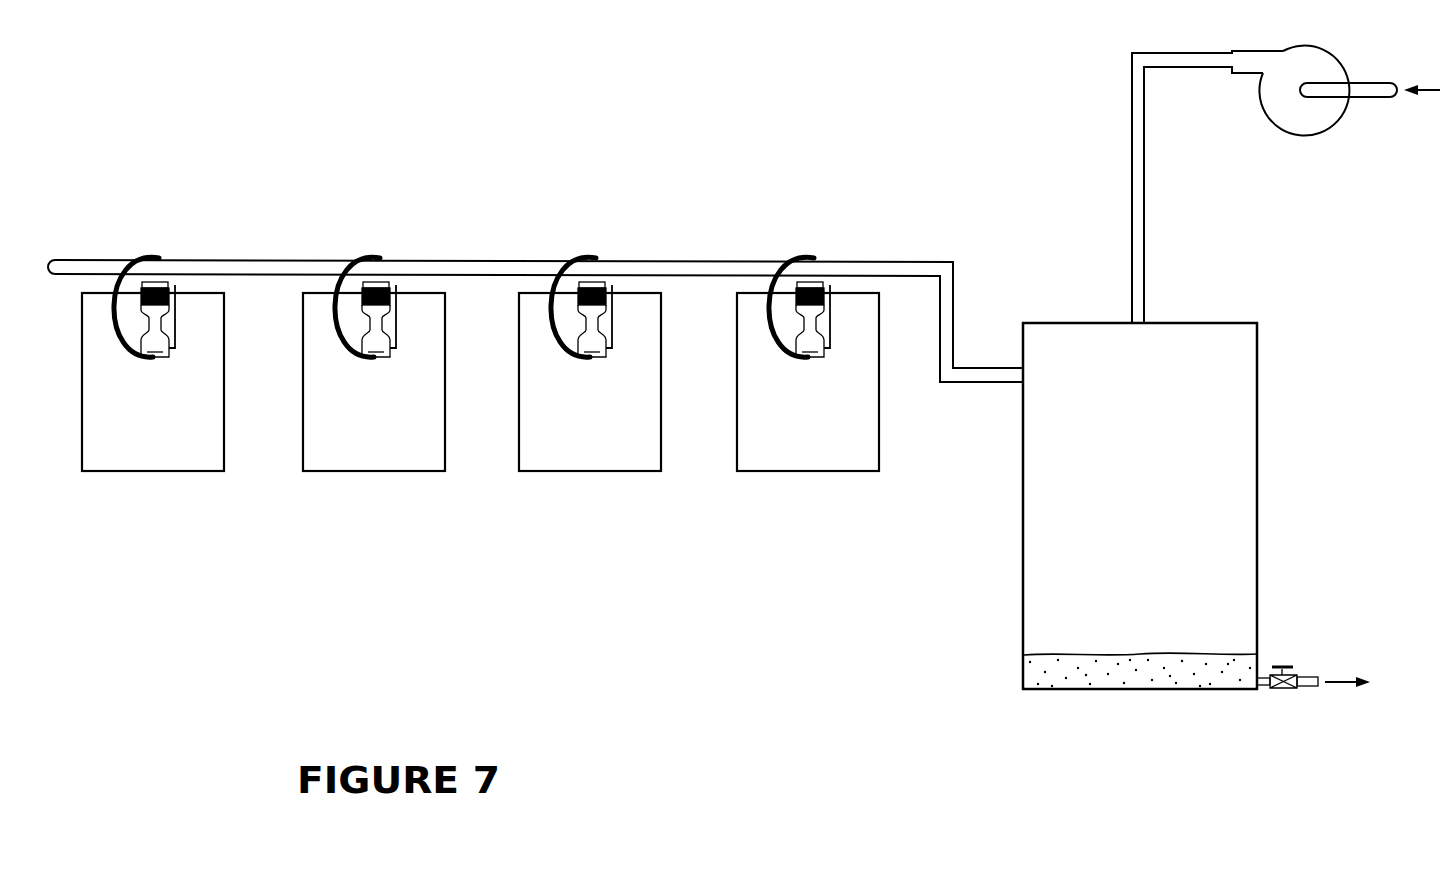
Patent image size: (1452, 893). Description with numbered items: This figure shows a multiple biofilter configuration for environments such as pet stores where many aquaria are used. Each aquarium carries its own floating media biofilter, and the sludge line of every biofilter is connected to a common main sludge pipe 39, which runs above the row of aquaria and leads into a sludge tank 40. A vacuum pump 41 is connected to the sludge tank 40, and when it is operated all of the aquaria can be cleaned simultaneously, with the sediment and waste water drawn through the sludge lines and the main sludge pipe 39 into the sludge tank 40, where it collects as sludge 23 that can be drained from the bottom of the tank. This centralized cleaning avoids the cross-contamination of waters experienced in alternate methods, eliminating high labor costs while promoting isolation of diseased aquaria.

The sludge 23 is at (1215, 658).
The main sludge pipe 39 is at (453, 260).
The sludge tank 40 is at (1022, 584).
The vacuum pump 41 is at (1295, 123).